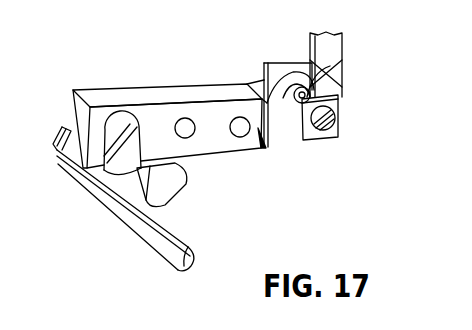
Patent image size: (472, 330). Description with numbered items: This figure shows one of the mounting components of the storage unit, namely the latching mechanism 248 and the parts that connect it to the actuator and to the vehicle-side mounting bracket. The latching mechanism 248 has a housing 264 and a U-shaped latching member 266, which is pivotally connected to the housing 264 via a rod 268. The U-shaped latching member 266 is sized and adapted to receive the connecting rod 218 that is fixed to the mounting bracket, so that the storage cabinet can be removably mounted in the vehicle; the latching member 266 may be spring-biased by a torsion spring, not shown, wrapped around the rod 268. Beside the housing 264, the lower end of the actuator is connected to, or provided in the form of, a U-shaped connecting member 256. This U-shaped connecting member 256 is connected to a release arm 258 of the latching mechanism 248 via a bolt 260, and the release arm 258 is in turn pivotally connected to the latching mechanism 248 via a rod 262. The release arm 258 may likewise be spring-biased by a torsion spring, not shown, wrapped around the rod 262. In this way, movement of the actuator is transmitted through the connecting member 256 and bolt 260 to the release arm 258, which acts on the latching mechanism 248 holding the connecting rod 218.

The second connecting rod 218 is at (119, 217).
The latching mechanism 248 is at (170, 73).
The U-shaped connecting member 256 is at (279, 53).
The release arm 258 is at (286, 125).
The bolt 260 is at (333, 58).
The rod 262 is at (238, 117).
The housing 264 is at (118, 98).
The U-shaped latching member 266 is at (163, 183).
The rod 268 is at (190, 137).